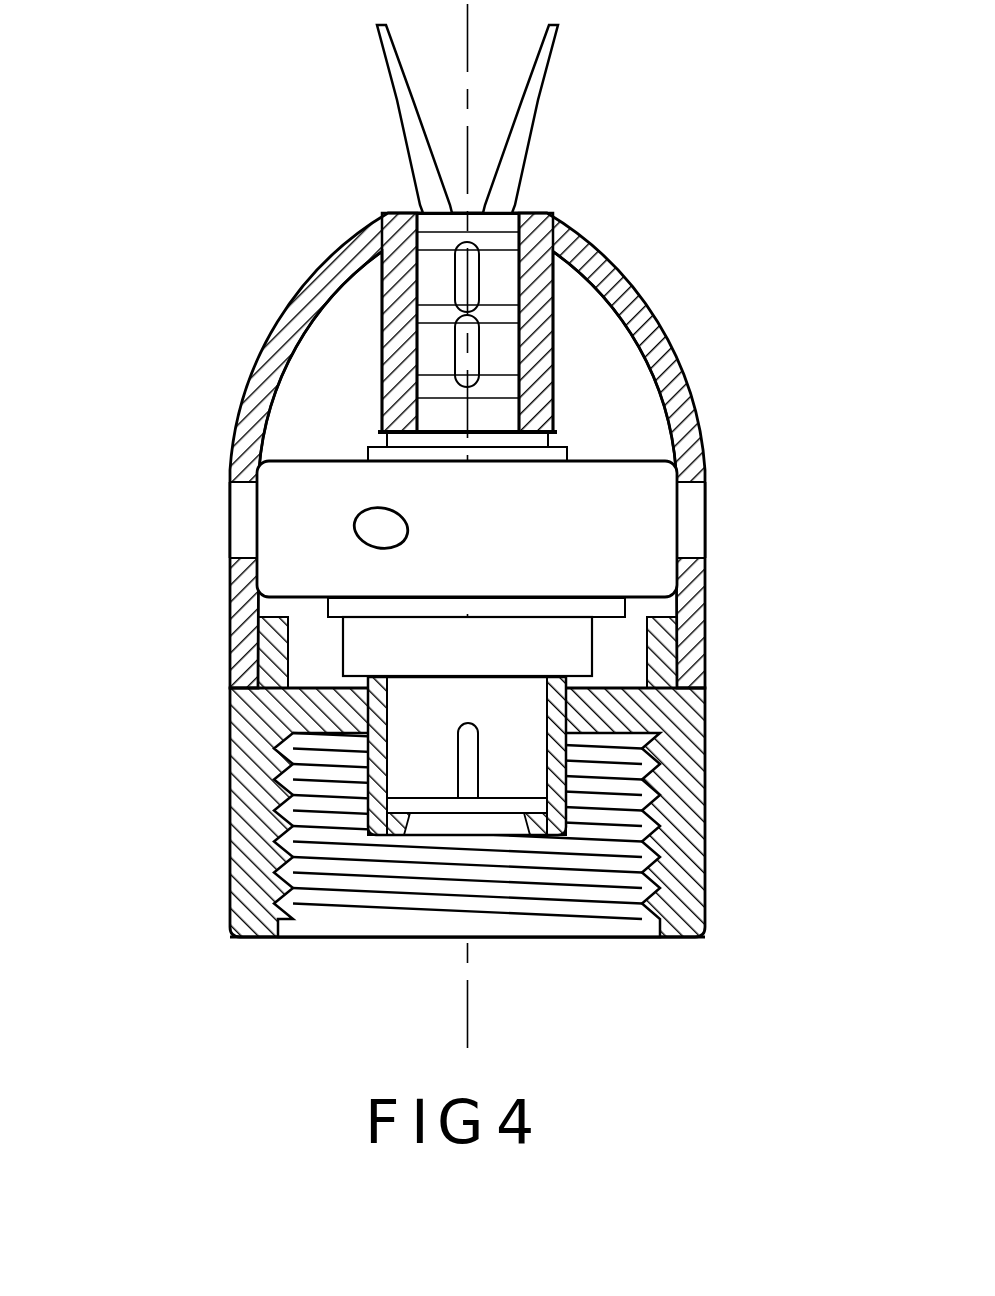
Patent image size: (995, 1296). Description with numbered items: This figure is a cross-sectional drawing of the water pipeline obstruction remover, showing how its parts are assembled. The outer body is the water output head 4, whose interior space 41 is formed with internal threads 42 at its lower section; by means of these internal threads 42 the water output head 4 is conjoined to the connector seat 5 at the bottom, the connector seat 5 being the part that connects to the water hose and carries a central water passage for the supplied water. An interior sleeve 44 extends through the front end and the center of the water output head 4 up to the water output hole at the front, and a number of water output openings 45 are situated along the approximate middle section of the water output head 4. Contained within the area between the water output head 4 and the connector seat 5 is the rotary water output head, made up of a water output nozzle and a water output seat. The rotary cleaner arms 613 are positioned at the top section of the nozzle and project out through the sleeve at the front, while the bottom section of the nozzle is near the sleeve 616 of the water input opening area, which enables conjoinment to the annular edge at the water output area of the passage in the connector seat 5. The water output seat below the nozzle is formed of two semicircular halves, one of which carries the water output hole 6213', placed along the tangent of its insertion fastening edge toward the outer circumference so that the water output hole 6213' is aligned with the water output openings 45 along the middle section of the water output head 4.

The water output head 4 is at (700, 408).
The interior space 41 is at (628, 383).
The internal threads 42 is at (712, 633).
The interior sleeve 44 is at (553, 337).
The water output openings 45 is at (695, 523).
The connector seat 5 is at (712, 777).
The rotary cleaner arms 613 is at (543, 97).
The sleeve 616 is at (342, 650).
The water output hole 6213' is at (223, 515).